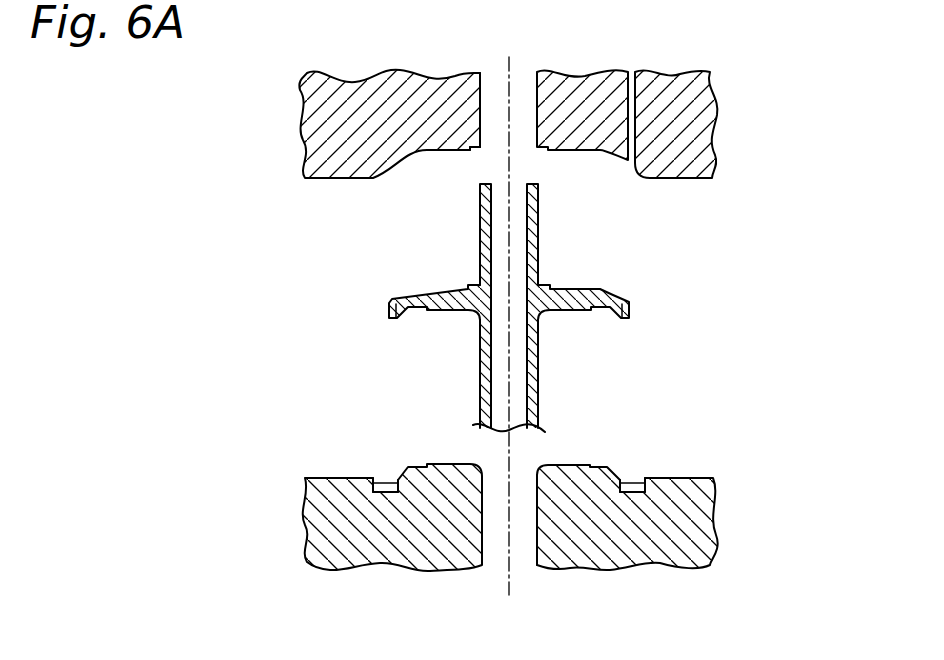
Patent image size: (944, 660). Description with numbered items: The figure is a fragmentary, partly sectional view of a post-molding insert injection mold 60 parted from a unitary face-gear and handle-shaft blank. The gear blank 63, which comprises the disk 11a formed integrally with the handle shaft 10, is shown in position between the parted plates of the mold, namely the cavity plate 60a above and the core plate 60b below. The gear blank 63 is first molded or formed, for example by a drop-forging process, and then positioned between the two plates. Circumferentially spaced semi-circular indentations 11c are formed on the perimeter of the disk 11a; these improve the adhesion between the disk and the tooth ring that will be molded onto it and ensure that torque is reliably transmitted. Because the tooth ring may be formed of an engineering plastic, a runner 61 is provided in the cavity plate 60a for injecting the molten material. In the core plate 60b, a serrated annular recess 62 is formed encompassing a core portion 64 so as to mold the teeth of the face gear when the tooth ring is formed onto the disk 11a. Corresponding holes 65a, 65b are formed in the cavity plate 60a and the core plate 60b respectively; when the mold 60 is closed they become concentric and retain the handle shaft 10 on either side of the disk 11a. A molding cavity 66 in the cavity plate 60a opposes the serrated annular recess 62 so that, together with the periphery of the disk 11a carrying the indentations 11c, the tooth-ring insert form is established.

The handle shaft 10 is at (471, 308).
The disk 11a is at (562, 297).
The semi-circular indentations 11c is at (389, 310).
The mold 60 is at (768, 120).
The cavity plate 60a is at (343, 137).
The core plate 60b is at (332, 497).
The runner 61 is at (628, 100).
The serrated annular recess 62 is at (633, 482).
The gear blank 63 is at (572, 268).
The core portion 64 is at (461, 465).
The hole in cavity plate 65a is at (487, 100).
The hole in core plate 65b is at (537, 522).
The molding cavity 66 is at (437, 150).